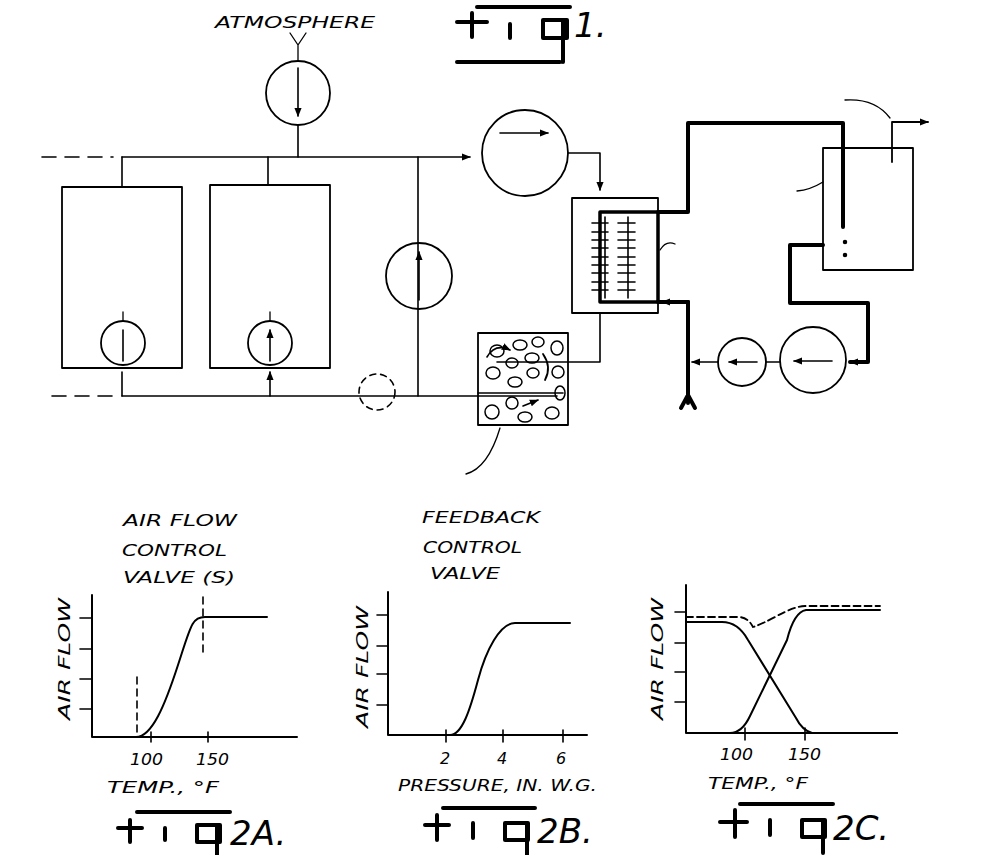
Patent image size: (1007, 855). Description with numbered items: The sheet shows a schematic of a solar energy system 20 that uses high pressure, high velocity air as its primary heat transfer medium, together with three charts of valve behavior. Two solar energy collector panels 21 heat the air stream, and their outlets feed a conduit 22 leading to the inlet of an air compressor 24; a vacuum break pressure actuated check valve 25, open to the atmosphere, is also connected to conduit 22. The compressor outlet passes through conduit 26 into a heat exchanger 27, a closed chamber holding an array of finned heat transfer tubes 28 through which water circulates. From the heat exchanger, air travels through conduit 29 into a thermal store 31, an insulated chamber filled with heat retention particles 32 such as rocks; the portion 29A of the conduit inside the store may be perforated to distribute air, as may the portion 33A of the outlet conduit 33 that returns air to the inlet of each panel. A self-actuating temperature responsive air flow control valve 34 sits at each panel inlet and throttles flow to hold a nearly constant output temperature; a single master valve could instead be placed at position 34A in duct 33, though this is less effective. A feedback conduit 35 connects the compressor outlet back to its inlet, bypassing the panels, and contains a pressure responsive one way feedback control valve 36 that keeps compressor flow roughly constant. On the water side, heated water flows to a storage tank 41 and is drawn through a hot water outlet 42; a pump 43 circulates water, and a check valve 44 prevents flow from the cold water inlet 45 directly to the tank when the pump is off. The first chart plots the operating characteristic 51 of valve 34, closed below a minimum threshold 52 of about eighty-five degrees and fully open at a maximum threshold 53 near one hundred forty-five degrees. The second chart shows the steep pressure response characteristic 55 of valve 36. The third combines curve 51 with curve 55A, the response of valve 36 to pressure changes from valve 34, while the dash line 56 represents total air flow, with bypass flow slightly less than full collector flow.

In FIG. 1, the solar energy system 20 is at (445, 142).
In FIG. 1, the solar energy collector panel 21 is at (77, 187).
In FIG. 1, the conduit 22 is at (378, 157).
In FIG. 1, the air compressor 24 is at (556, 118).
In FIG. 1, the vacuum break pressure actuated check valve 25 is at (324, 74).
In FIG. 1, the conduit 26 is at (603, 170).
In FIG. 1, the heat exchanger 27 is at (572, 236).
In FIG. 1, the finned heat transfer tubes 28 is at (603, 282).
In FIG. 1, the conduit 29 is at (603, 341).
In FIG. 1, the portion of conduit 29A is at (567, 373).
In FIG. 1, the thermal store 31 is at (478, 351).
In FIG. 1, the heat retention particles 32 is at (550, 420).
In FIG. 1, the outlet conduit 33 is at (340, 400).
In FIG. 1, the portion of outlet conduit 33A is at (472, 402).
In FIG. 1, the air flow control valve 34 is at (105, 360).
In FIG. 2A, the air flow control valve 34 is at (201, 650).
In FIG. 1, the position for single master valve 34A is at (383, 374).
In FIG. 1, the air feedback conduit 35 is at (421, 323).
In FIG. 1, the feedback control valve 36 is at (441, 252).
In FIG. 2B, the feedback control valve 36 is at (502, 647).
In FIG. 1, the storage tank 41 is at (884, 290).
In FIG. 1, the hot water outlet 42 is at (932, 118).
In FIG. 1, the pump 43 is at (815, 393).
In FIG. 1, the check valve 44 is at (748, 342).
In FIG. 1, the cold water inlet 45 is at (693, 385).
In FIG. 2A, the operating characteristic curve 51 is at (183, 658).
In FIG. 2C, the operating characteristic curve 51 is at (783, 648).
In FIG. 2A, the minimum threshold 52 is at (137, 710).
In FIG. 2A, the maximum threshold 53 is at (203, 650).
In FIG. 2B, the response characteristic curve 55 is at (484, 668).
In FIG. 2C, the feedback valve operation curve 55A is at (759, 665).
In FIG. 2C, the total air flow dash line 56 is at (741, 556).